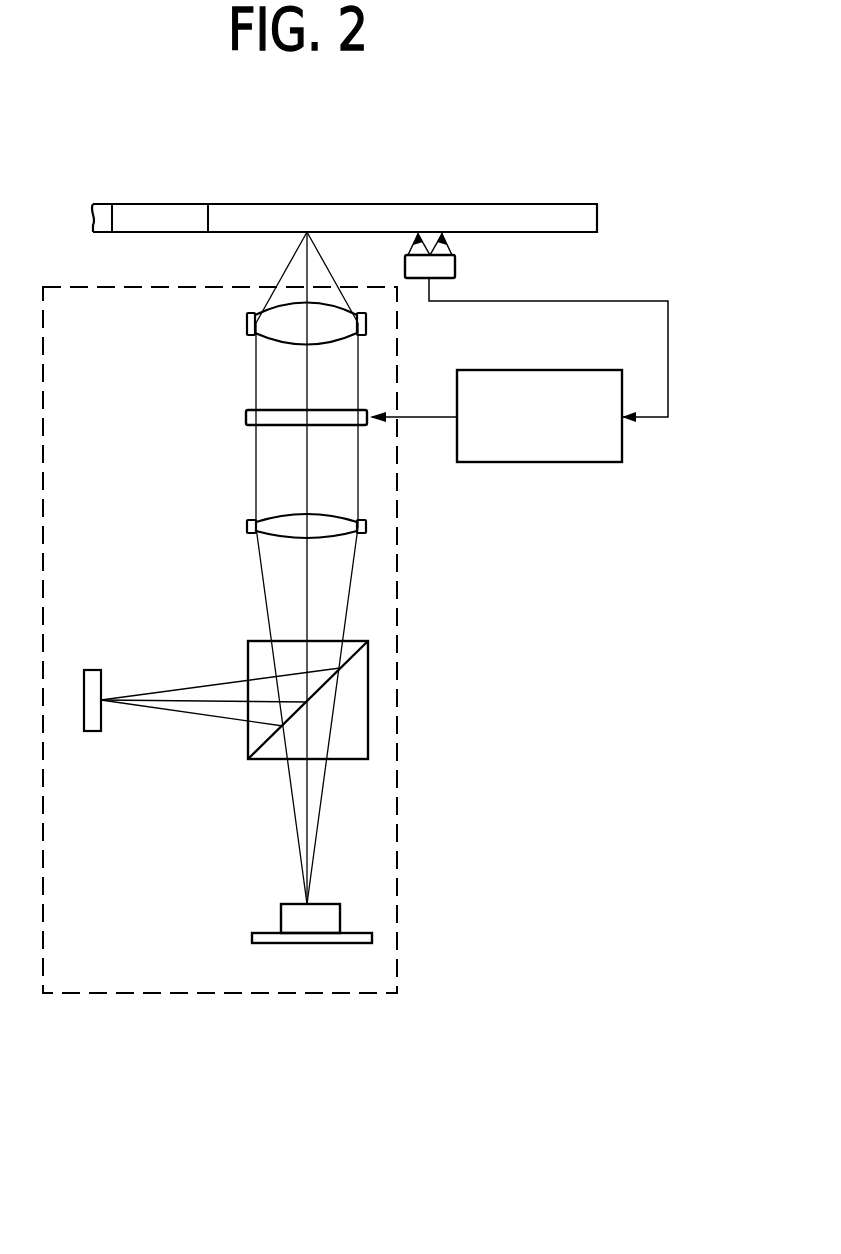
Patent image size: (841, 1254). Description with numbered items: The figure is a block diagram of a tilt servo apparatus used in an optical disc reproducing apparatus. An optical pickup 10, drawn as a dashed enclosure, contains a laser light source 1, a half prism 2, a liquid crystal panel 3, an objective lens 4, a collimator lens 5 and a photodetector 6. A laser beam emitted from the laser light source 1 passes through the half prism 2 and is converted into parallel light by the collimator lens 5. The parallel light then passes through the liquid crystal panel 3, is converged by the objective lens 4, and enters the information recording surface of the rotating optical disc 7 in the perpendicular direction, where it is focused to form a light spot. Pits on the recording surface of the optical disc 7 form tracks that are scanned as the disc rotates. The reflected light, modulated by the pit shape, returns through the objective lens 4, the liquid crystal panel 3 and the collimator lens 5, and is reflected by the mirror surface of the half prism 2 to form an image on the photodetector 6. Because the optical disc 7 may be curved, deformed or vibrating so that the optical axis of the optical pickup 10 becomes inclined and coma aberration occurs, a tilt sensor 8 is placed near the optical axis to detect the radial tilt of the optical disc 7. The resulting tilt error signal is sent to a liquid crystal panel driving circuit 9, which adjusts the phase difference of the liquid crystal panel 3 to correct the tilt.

The laser light source 1 is at (285, 918).
The half prism 2 is at (248, 745).
The liquid crystal panel 3 is at (246, 415).
The objective lens 4 is at (247, 323).
The collimator lens 5 is at (247, 525).
The photodetector 6 is at (92, 731).
The optical disc 7 is at (530, 204).
The tilt sensor 8 is at (456, 265).
The liquid crystal panel driving circuit 9 is at (500, 462).
The optical pickup 10 is at (127, 995).